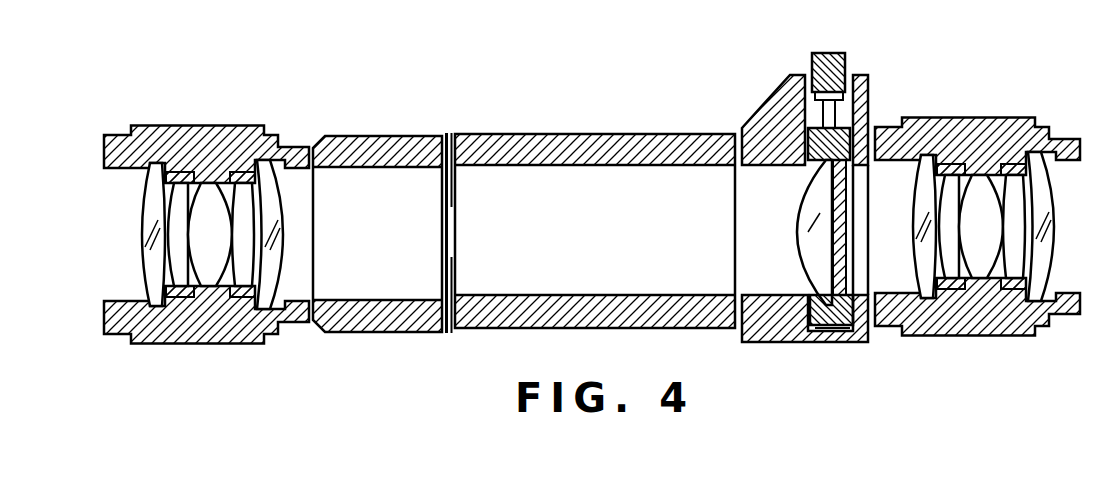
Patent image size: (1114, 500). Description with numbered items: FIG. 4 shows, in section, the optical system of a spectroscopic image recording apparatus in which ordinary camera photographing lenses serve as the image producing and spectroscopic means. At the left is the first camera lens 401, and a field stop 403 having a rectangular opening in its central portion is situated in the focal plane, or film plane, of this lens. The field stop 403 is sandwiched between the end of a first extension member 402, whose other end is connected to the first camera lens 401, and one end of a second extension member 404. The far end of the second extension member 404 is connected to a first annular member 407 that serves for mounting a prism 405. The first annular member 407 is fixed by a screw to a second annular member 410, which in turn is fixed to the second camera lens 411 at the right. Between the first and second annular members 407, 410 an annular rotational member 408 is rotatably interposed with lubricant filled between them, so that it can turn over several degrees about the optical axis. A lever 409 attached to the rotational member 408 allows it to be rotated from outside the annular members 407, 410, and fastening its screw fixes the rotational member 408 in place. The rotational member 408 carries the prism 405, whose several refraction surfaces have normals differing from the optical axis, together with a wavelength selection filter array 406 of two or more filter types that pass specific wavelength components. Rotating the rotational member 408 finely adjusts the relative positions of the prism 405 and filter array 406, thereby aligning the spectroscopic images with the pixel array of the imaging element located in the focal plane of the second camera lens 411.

The first camera lens 401 is at (183, 123).
The first extension member 402 is at (368, 135).
The field stop 403 is at (448, 133).
The second extension member 404 is at (603, 134).
The prism 405 is at (808, 230).
The wavelength selection filter array 406 is at (845, 184).
The first annular member 407 is at (760, 343).
The rotational member 408 is at (817, 343).
The lever 409 is at (845, 63).
The second annular member 410 is at (868, 343).
The second camera lens 411 is at (1013, 117).